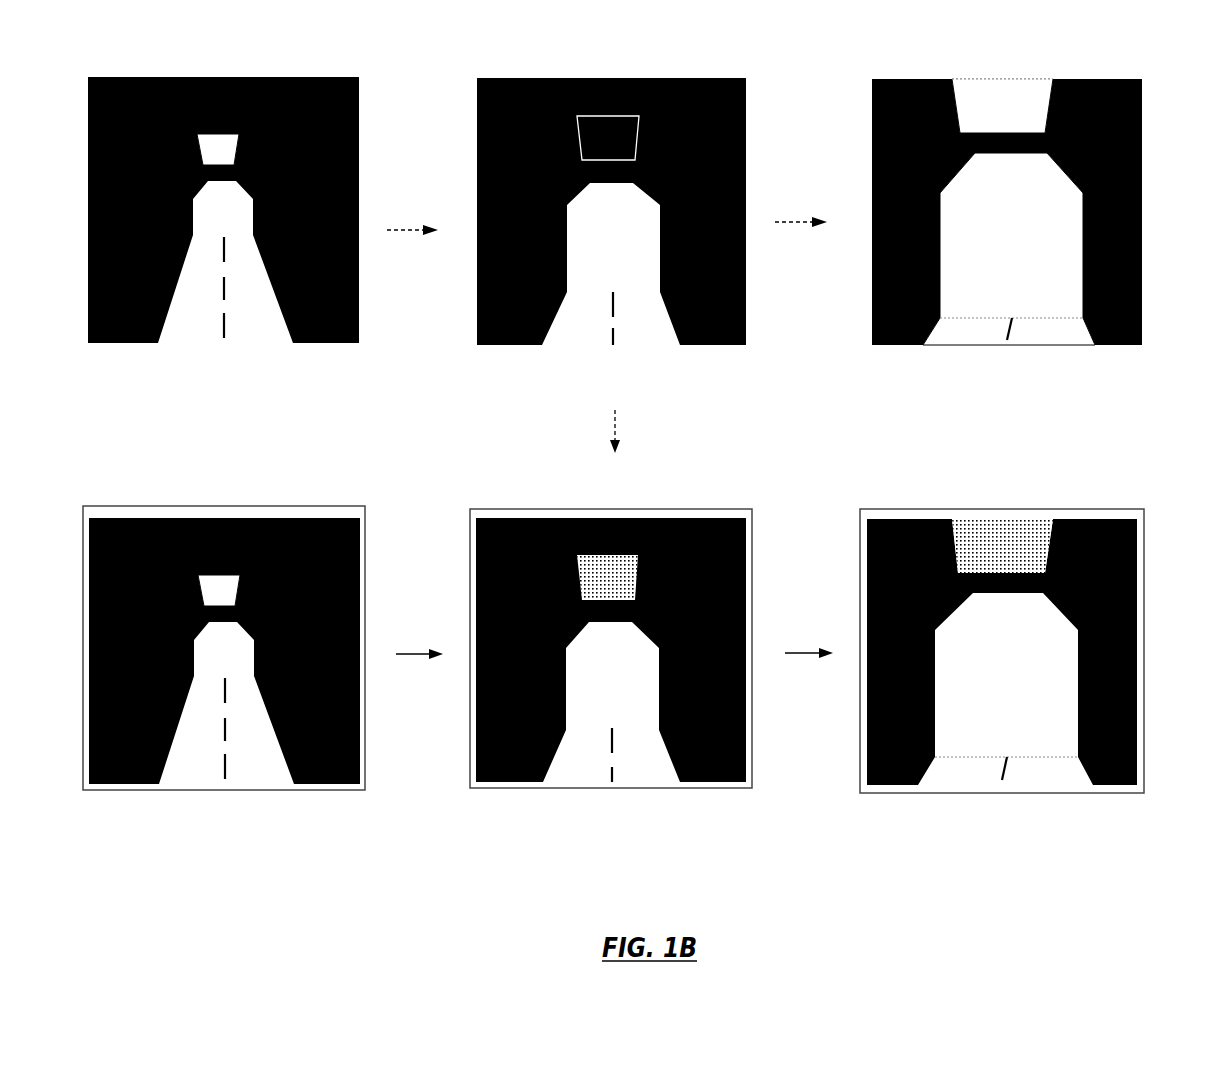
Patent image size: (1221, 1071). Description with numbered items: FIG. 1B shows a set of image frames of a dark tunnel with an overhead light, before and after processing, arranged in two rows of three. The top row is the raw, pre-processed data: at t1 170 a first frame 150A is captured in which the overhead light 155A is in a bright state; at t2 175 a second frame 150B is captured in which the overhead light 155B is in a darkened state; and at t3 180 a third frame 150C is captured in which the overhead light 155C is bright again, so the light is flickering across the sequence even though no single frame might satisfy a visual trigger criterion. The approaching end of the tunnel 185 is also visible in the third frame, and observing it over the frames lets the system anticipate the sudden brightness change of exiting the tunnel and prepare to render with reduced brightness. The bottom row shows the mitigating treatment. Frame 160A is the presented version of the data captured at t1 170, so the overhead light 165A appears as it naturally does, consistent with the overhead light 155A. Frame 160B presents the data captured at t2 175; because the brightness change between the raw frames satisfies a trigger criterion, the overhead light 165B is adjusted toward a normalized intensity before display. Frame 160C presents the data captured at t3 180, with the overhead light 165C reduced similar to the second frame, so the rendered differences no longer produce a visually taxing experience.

The first frame of pre-processed data 150A is at (222, 77).
The overhead light 155A is at (202, 134).
The second frame of pre-processed data 150B is at (607, 78).
The overhead light 155B is at (591, 133).
The third frame of pre-processed data 150C is at (957, 79).
The overhead light 155C is at (1037, 93).
The approaching end of the tunnel 185 is at (1010, 235).
The time t1 170 is at (236, 433).
The time t2 175 is at (615, 437).
The time t3 180 is at (1002, 437).
The frame 160A is at (222, 506).
The overhead light 165A is at (210, 592).
The frame 160B is at (612, 509).
The overhead light 165B is at (590, 567).
The frame 160C is at (973, 509).
The overhead light 165C is at (1037, 533).